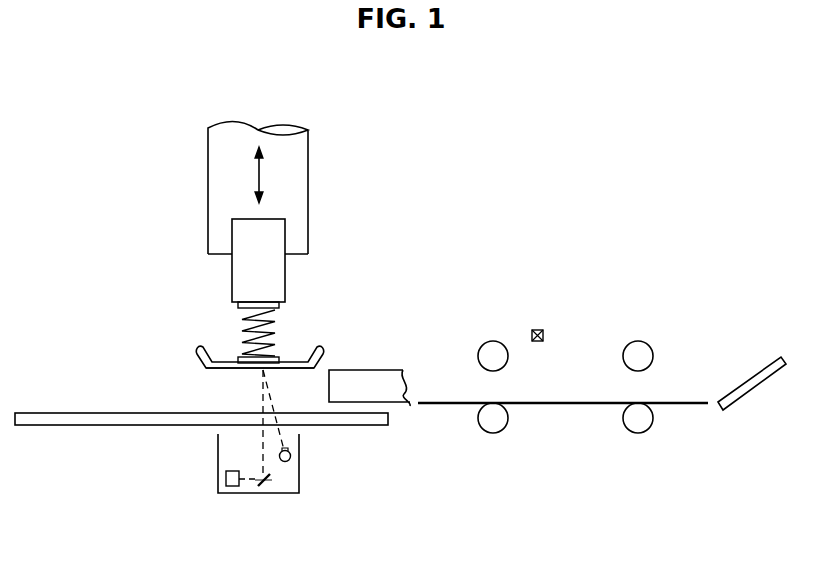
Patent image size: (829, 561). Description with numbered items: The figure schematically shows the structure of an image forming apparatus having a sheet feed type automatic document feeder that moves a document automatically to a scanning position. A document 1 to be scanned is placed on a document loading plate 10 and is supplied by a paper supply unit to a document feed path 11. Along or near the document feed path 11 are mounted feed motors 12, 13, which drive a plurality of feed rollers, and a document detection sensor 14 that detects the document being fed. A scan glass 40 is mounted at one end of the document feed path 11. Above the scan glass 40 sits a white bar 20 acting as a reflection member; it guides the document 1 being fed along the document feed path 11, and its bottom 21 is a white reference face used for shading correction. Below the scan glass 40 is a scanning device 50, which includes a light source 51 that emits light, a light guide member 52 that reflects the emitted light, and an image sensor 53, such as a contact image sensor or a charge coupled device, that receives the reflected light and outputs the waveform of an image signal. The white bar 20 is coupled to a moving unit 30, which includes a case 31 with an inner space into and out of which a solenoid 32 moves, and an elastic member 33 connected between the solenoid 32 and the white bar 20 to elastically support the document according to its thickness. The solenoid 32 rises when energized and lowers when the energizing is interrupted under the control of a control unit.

The document 1 is at (390, 371).
The document loading plate 10 is at (750, 388).
The document feed path 11 is at (566, 405).
The feed motor 12 is at (638, 342).
The feed motor 13 is at (493, 342).
The document detection sensor 14 is at (540, 330).
The white bar 20 is at (259, 357).
The bottom 21 is at (223, 370).
The moving unit 30 is at (276, 242).
The case 31 is at (208, 158).
The solenoid 32 is at (232, 276).
The elastic member 33 is at (242, 327).
The scan glass 40 is at (53, 413).
The scanning device 50 is at (278, 446).
The light source 51 is at (291, 452).
The light guide member 52 is at (266, 487).
The image sensor 53 is at (226, 478).